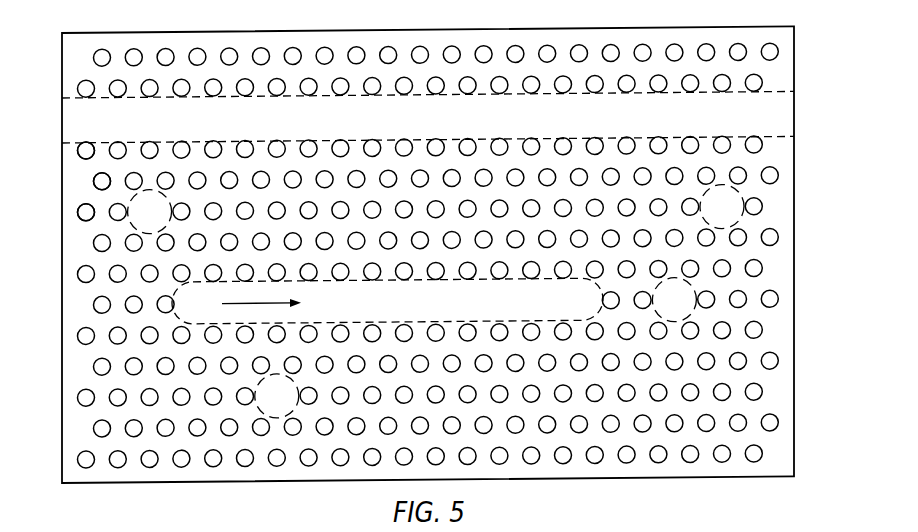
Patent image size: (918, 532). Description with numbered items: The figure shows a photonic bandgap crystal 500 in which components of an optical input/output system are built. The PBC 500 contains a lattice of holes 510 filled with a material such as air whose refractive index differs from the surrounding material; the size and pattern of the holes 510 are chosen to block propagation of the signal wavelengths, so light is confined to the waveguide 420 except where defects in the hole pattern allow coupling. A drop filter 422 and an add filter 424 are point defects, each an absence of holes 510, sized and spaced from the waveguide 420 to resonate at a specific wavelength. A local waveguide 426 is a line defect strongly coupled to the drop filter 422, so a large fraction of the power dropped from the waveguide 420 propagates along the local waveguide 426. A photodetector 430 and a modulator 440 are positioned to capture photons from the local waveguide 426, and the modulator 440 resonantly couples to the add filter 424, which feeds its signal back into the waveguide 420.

The photonic bandgap crystal 500 is at (220, 33).
The waveguide 420 is at (442, 128).
The local waveguide 426 is at (403, 308).
The drop filter 422 is at (129, 220).
The add filter 424 is at (722, 206).
The photodetector 430 is at (292, 406).
The modulator 440 is at (689, 312).
The holes 510 is at (85, 152).